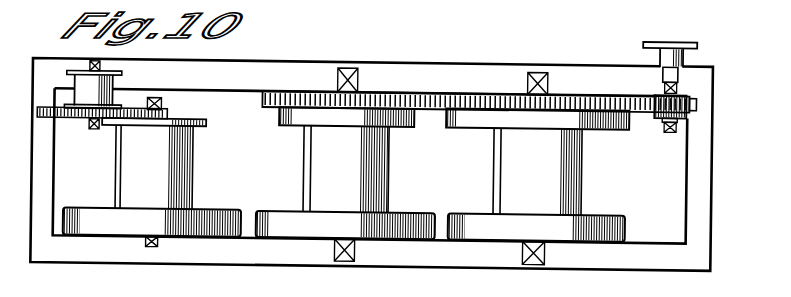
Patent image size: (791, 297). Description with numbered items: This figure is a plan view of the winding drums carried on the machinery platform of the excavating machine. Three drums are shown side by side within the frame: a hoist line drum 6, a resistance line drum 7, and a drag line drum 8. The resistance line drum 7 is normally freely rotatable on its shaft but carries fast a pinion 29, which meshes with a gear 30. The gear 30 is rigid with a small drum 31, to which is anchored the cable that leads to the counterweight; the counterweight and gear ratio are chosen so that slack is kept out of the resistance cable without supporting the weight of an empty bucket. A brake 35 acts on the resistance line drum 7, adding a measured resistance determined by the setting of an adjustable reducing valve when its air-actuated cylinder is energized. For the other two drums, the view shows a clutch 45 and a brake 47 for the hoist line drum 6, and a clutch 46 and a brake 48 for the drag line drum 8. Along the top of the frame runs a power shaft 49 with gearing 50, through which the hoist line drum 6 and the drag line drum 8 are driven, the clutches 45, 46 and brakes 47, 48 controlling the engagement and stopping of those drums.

The hoist line drum 6 is at (390, 170).
The resistance line drum 7 is at (193, 178).
The drag line drum 8 is at (583, 173).
The pinion 29 is at (165, 110).
The gear 30 is at (88, 129).
The small drum 31 is at (114, 90).
The brake 35 is at (207, 216).
The clutch 45 is at (293, 121).
The clutch 46 is at (480, 117).
The brake 47 is at (287, 218).
The brake 48 is at (475, 219).
The power shaft 49 is at (661, 51).
The gearing 50 is at (585, 88).